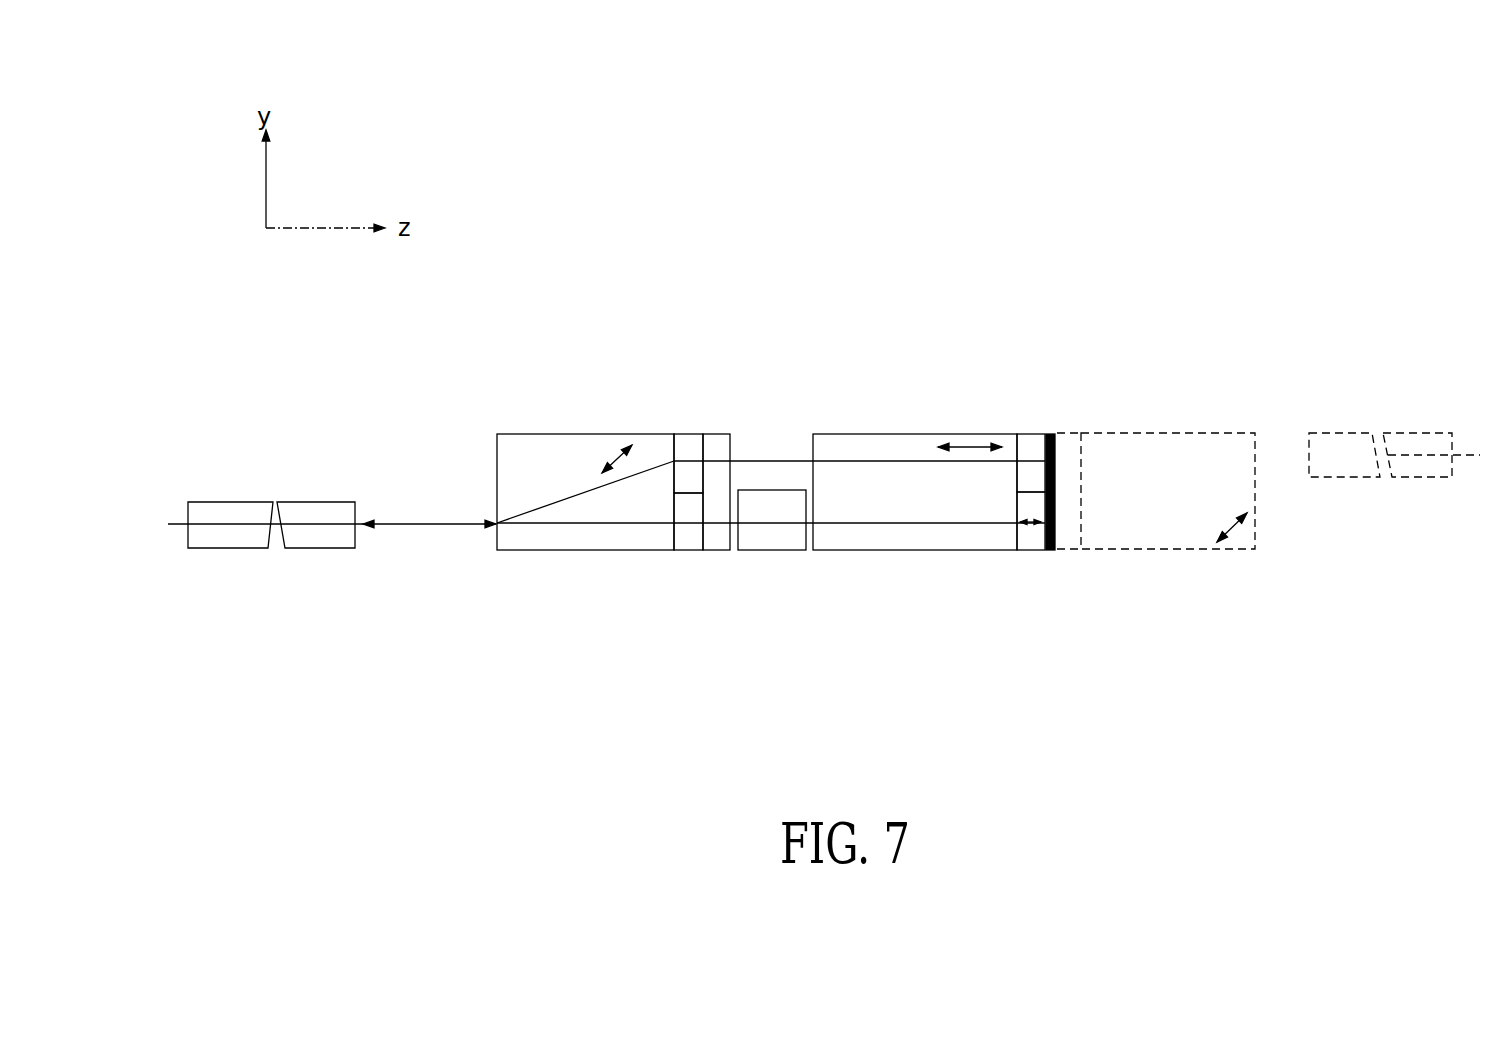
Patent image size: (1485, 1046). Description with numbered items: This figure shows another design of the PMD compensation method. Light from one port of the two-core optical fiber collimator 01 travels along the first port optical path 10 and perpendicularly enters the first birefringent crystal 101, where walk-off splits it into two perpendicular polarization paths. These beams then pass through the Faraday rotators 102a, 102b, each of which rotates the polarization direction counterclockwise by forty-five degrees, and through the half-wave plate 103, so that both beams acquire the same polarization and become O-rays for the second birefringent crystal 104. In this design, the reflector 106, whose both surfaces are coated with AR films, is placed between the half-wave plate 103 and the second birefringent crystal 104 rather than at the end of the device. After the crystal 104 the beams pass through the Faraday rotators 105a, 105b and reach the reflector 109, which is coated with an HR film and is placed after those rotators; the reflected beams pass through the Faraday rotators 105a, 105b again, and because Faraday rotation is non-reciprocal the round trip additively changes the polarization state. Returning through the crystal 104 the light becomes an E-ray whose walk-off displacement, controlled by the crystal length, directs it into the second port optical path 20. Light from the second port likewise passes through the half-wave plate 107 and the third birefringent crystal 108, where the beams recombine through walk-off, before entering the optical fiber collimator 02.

The two-core optical fiber collimator 01 is at (264, 475).
The optical fiber collimator 02 is at (1380, 412).
The first port optical path 10 is at (470, 495).
The second port optical path 20 is at (378, 545).
The first birefringent crystal 101 is at (567, 553).
The Faraday rotator 102a is at (687, 432).
The Faraday rotator 102b is at (687, 553).
The half-wave plate 103 is at (716, 552).
The second birefringent crystal 104 is at (907, 552).
The Faraday rotator 105a is at (1028, 432).
The Faraday rotator 105b is at (1028, 552).
The reflector 106 is at (770, 548).
The half-wave plate 107 is at (1067, 550).
The third birefringent crystal 108 is at (1160, 432).
The reflector 109 is at (1048, 432).